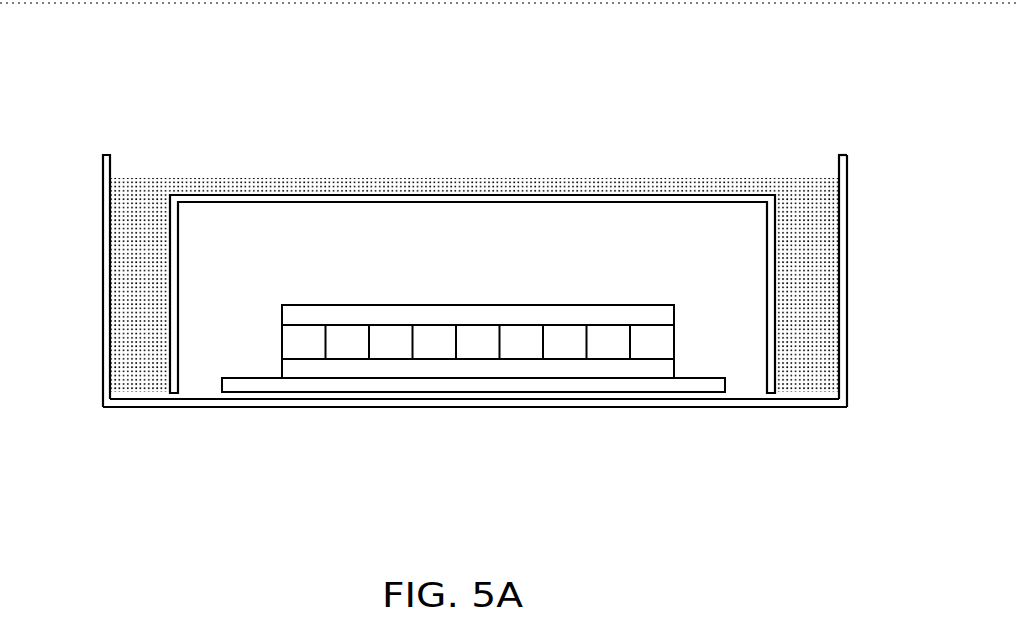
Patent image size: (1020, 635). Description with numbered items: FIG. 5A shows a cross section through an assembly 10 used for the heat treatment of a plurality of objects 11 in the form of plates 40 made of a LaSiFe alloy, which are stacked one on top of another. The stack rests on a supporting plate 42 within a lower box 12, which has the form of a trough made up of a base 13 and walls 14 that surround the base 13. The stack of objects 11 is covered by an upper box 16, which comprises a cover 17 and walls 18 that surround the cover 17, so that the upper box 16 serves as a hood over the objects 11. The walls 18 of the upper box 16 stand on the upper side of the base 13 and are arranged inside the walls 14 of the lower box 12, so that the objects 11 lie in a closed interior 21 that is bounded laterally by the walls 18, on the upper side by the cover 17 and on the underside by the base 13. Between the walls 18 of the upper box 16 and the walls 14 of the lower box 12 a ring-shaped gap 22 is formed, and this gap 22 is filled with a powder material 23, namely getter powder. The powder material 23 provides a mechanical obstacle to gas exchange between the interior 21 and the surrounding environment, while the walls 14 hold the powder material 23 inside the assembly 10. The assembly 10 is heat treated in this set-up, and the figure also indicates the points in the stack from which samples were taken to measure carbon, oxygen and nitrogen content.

The assembly 10 is at (148, 126).
The object 11 is at (687, 333).
The lower box 12 is at (858, 188).
The base 13 is at (458, 407).
The walls 14 is at (848, 283).
The upper box 16 is at (624, 175).
The cover 17 is at (330, 195).
The walls 18 is at (170, 297).
The interior 21 is at (465, 262).
The gap 22 is at (805, 160).
The powder material 23 is at (810, 350).
The plates 40 is at (292, 369).
The support plate 42 is at (252, 385).